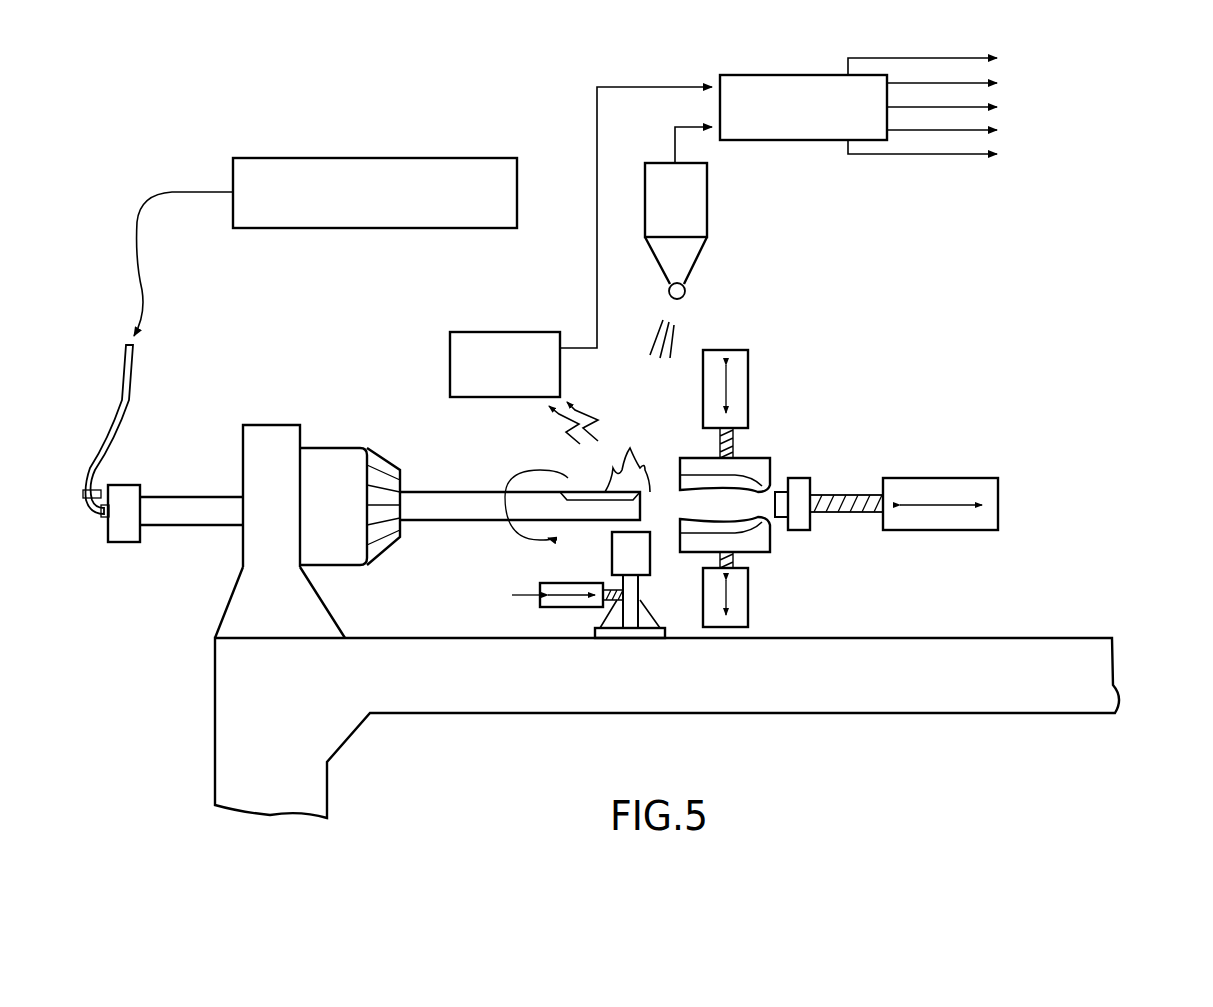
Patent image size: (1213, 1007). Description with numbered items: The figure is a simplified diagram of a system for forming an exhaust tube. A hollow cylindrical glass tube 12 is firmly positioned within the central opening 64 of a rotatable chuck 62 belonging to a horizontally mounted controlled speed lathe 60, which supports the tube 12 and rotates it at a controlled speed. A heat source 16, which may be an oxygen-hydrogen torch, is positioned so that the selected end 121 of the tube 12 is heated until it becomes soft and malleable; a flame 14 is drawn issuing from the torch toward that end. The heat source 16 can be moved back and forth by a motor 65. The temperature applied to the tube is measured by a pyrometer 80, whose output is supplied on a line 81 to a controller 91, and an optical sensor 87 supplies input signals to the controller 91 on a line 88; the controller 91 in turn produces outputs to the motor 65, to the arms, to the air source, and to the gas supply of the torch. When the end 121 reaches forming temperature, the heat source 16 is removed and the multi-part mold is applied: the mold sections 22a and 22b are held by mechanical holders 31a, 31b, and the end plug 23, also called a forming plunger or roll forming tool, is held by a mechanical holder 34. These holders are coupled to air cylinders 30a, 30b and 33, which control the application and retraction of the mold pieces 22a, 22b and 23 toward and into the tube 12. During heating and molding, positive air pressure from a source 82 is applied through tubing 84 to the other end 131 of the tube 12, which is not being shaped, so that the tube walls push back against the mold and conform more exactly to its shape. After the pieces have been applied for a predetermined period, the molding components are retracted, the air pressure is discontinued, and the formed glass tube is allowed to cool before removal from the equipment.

The hollow cylindrical glass tube 12 is at (493, 492).
The flame 14 is at (640, 503).
The heat source 16 is at (612, 565).
The mold section 22a is at (760, 460).
The mold section 22b is at (763, 541).
The end plug 23 is at (805, 478).
The air cylinder 30a is at (749, 358).
The air cylinder 30b is at (750, 616).
The mechanical holder 31a is at (737, 441).
The mechanical holder 31b is at (736, 558).
The air cylinder 33 is at (990, 530).
The mechanical holder 34 is at (864, 492).
The controlled speed lathe 60 is at (188, 573).
The rotatable chuck 62 is at (333, 448).
The central opening 64 is at (400, 492).
The motor 65 is at (560, 608).
The pyrometer 80 is at (705, 249).
The line 81 is at (674, 140).
The positive air pressure source 82 is at (343, 158).
The tubing 84 is at (132, 400).
The optical sensor 87 is at (462, 332).
The line 88 is at (613, 84).
The controller 91 is at (778, 74).
The selected end 121 is at (600, 500).
The one end of tube 131 is at (145, 500).